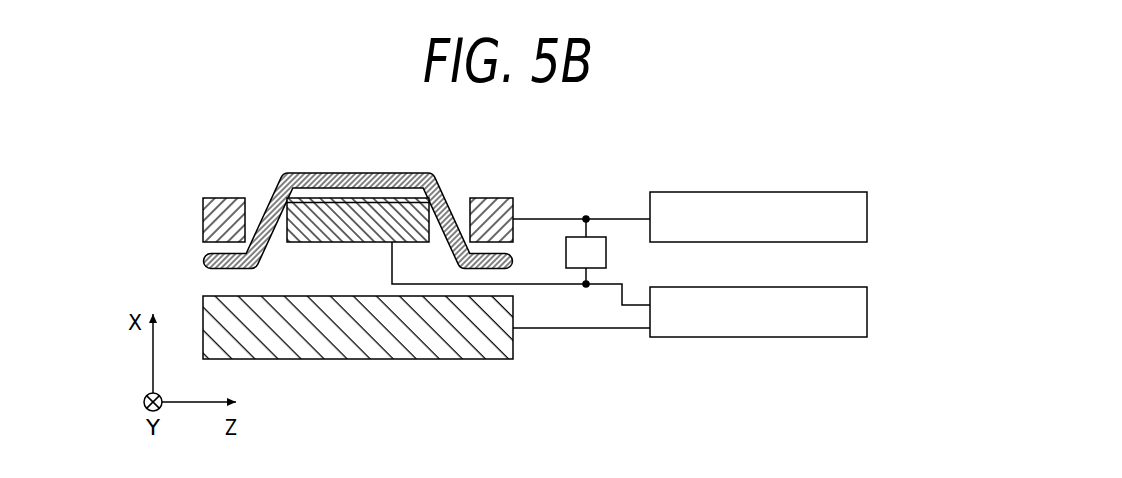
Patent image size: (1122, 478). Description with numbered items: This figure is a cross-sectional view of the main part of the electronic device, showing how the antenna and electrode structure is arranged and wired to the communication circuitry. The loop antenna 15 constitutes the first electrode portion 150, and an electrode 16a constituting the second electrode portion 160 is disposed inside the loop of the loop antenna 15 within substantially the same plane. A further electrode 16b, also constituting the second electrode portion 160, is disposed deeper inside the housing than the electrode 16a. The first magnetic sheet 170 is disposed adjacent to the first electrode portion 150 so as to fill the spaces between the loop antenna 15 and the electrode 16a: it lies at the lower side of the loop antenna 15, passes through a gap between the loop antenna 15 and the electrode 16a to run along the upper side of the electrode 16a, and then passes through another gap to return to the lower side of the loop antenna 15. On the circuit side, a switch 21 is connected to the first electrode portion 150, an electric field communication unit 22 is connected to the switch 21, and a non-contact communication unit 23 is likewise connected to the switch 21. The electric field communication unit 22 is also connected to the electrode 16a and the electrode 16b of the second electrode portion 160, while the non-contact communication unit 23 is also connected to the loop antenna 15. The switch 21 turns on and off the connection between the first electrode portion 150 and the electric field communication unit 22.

The loop antenna 15 is at (225, 206).
The first electrode portion 150 is at (205, 194).
The first magnetic sheet 170 is at (364, 174).
The electrode 16a is at (327, 242).
The electrode 16b is at (382, 359).
The second electrode portion 160 is at (298, 402).
The switch 21 is at (606, 252).
The electric field communication unit 22 is at (772, 287).
The non-contact communication unit 23 is at (772, 192).